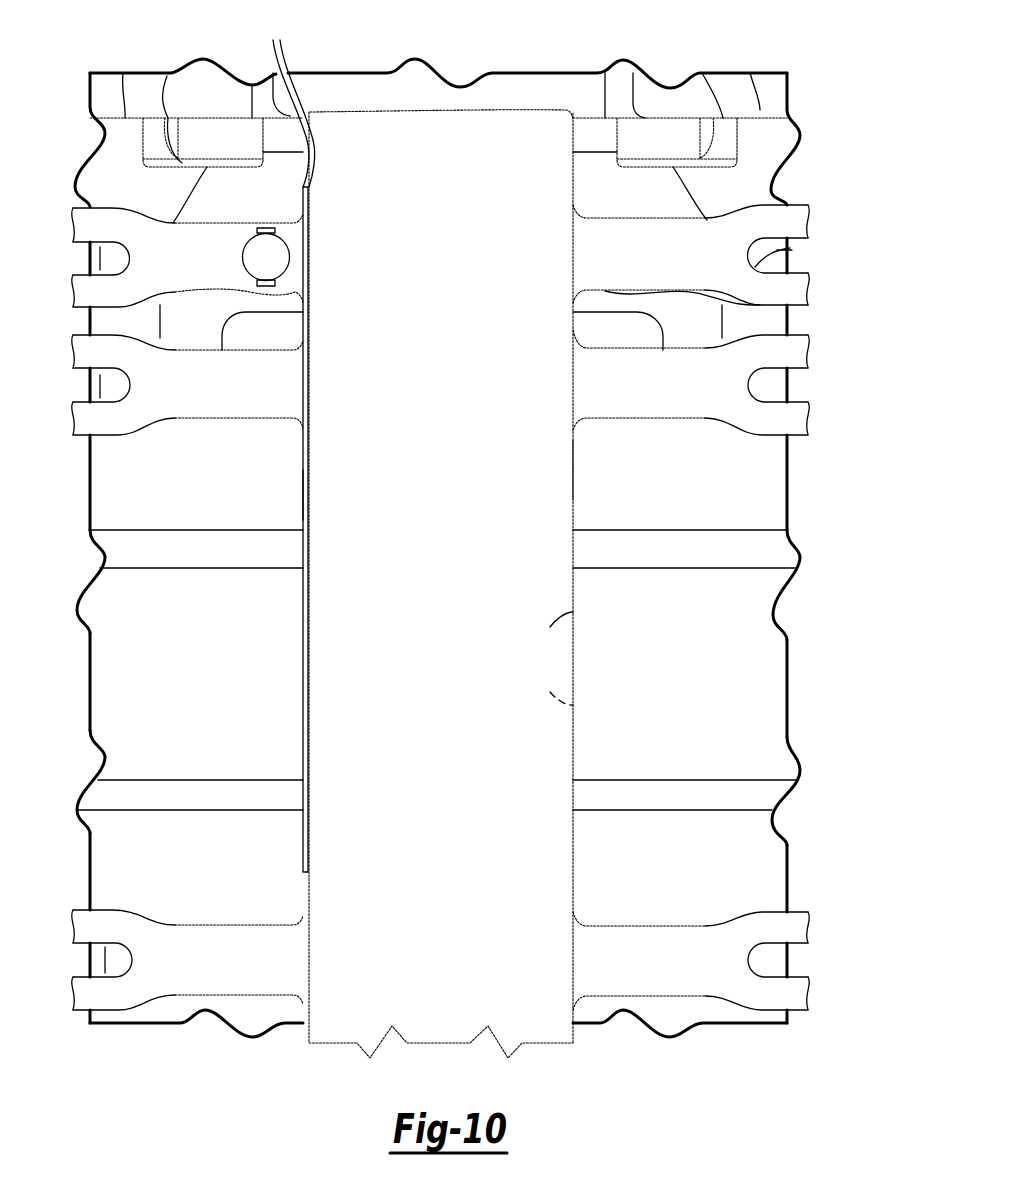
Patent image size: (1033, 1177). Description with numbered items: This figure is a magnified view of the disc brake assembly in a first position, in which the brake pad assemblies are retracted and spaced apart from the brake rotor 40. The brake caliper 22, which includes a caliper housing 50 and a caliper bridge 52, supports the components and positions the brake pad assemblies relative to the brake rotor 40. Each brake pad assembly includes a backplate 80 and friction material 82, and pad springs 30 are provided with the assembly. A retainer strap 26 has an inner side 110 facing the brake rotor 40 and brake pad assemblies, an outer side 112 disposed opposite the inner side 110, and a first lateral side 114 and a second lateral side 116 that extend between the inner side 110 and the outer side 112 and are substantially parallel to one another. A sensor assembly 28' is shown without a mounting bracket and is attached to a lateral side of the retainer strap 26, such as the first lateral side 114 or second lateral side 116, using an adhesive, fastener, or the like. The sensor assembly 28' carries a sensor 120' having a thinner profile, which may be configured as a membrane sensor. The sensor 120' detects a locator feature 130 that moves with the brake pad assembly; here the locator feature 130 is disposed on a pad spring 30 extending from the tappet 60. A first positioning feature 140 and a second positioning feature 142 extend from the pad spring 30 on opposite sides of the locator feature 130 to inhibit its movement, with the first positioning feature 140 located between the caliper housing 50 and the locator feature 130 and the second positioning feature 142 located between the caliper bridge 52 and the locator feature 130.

The brake caliper 22 is at (437, 515).
The caliper housing 50 is at (723, 78).
The retainer strap 26 is at (457, 297).
The sensor assembly 28' is at (243, 456).
The sensor 120' is at (243, 456).
The pad spring 30 is at (668, 267).
The brake rotor 40 is at (203, 666).
The caliper bridge 52 is at (243, 1035).
The tappet 60 is at (787, 313).
The backplate 80 is at (93, 381).
The friction material 82 is at (205, 476).
The inner side 110 is at (573, 705).
The outer side 112 is at (573, 612).
The first lateral side 114 is at (575, 468).
The second lateral side 116 is at (303, 497).
The locator feature 130 is at (242, 257).
The first positioning feature 140 is at (257, 231).
The second positioning feature 142 is at (257, 283).